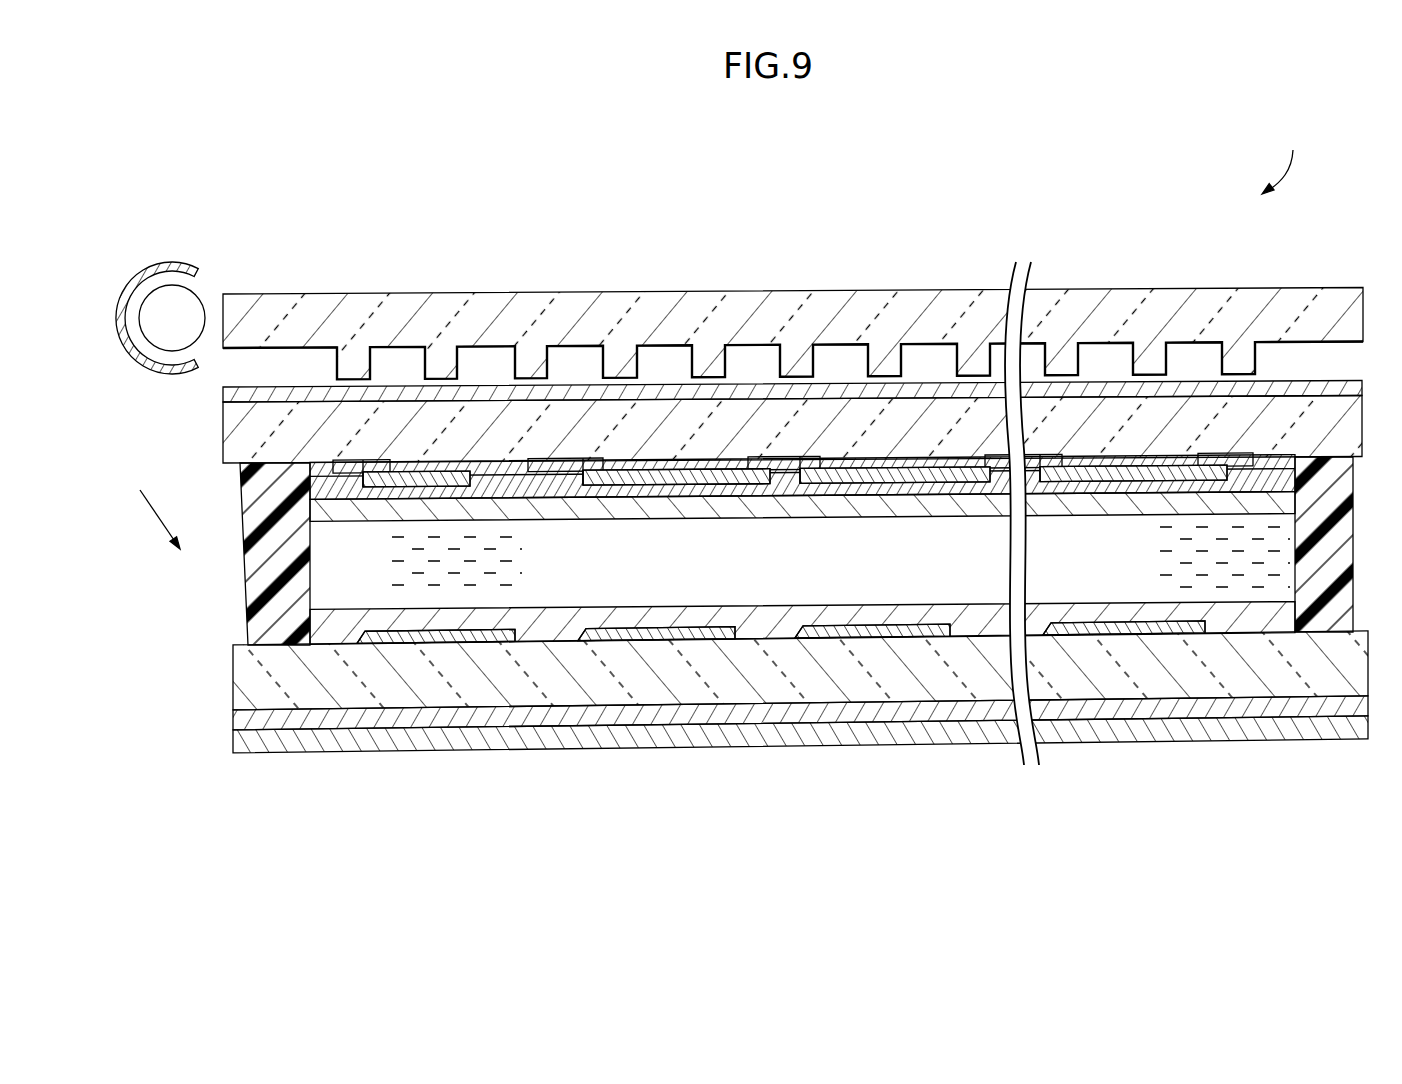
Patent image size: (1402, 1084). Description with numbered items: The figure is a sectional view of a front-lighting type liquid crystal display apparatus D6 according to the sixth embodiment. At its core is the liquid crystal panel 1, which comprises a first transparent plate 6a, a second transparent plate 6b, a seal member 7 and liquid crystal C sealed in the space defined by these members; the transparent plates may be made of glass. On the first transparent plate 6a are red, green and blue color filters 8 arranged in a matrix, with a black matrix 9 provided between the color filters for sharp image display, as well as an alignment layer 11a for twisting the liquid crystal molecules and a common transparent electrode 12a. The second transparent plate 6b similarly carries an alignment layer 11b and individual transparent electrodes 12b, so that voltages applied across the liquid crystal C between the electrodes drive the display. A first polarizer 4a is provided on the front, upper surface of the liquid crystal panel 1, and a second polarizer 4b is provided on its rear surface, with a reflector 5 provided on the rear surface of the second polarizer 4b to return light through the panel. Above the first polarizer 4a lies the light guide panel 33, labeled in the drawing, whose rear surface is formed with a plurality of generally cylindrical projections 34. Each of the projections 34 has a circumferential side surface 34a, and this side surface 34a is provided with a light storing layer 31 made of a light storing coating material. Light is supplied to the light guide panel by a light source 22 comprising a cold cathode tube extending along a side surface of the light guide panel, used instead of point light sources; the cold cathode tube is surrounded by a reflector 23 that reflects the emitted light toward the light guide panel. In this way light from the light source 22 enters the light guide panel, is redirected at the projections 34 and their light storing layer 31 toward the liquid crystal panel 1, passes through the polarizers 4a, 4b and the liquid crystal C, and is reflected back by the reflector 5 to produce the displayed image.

The liquid crystal display apparatus D6 is at (1286, 154).
The liquid crystal panel 1 is at (151, 502).
The first polarizer 4a is at (258, 392).
The second polarizer 4b is at (236, 719).
The reflector 5 is at (236, 744).
The first transparent plate 6a is at (240, 441).
The second transparent plate 6b is at (252, 673).
The seal member 7 is at (260, 542).
The color filters 8 is at (476, 486).
The black matrix 9 is at (355, 476).
The alignment layer 11a is at (330, 505).
The alignment layer 11b is at (348, 631).
The common transparent electrode 12a is at (332, 471).
The individual transparent electrodes 12b is at (430, 638).
The light source 22 is at (160, 267).
The reflector 23 is at (123, 310).
The light storing layer 31 is at (1363, 298).
The light guide plate 33 is at (432, 327).
The projections 34 is at (340, 378).
The circumferential side surface 34a is at (345, 378).
The liquid crystal C is at (340, 591).